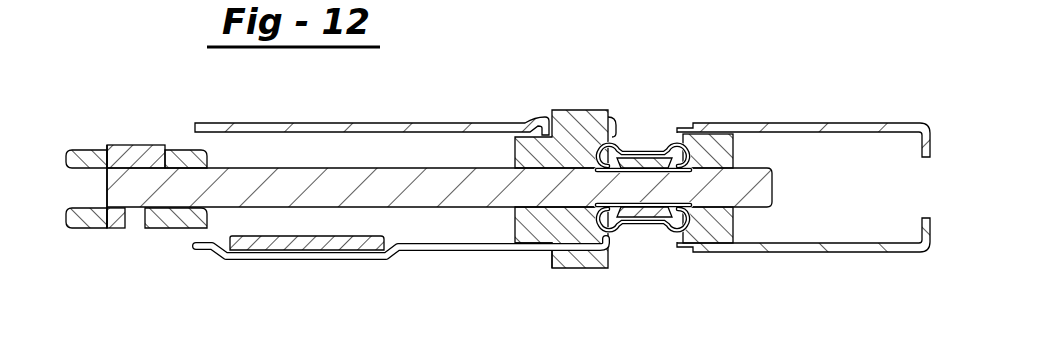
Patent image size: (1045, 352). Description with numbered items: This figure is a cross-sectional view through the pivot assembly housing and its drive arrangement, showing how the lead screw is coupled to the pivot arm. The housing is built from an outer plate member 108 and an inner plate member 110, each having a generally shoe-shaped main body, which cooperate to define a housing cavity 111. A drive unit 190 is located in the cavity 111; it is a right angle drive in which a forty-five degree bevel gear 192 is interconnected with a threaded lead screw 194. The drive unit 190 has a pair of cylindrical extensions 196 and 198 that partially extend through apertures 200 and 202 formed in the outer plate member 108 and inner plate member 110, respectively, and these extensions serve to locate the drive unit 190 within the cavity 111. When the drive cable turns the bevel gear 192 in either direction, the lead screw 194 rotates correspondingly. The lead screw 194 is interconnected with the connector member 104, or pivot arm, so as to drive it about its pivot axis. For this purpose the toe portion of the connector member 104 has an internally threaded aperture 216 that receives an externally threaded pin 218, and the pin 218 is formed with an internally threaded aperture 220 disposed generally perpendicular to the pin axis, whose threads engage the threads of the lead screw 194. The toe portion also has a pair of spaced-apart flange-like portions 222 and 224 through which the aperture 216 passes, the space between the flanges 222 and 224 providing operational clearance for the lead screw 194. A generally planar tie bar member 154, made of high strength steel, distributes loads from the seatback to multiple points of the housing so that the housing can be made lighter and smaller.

The connector member 104 is at (88, 148).
The outer plate member 108 is at (418, 252).
The inner plate member 110 is at (822, 124).
The housing cavity 111 is at (834, 206).
The tie bar member 154 is at (272, 240).
The drive unit 190 is at (655, 133).
The bevel gear 192 is at (648, 232).
The threaded lead screw 194 is at (452, 190).
The cylindrical extension 196 is at (600, 266).
The cylindrical extension 198 is at (587, 118).
The aperture 200 is at (553, 270).
The aperture 202 is at (557, 110).
The internally threaded aperture 216 is at (117, 228).
The externally threaded pin 218 is at (130, 152).
The internally threaded aperture 220 is at (160, 157).
The flange-like portion 222 is at (67, 157).
The flange-like portion 224 is at (67, 229).